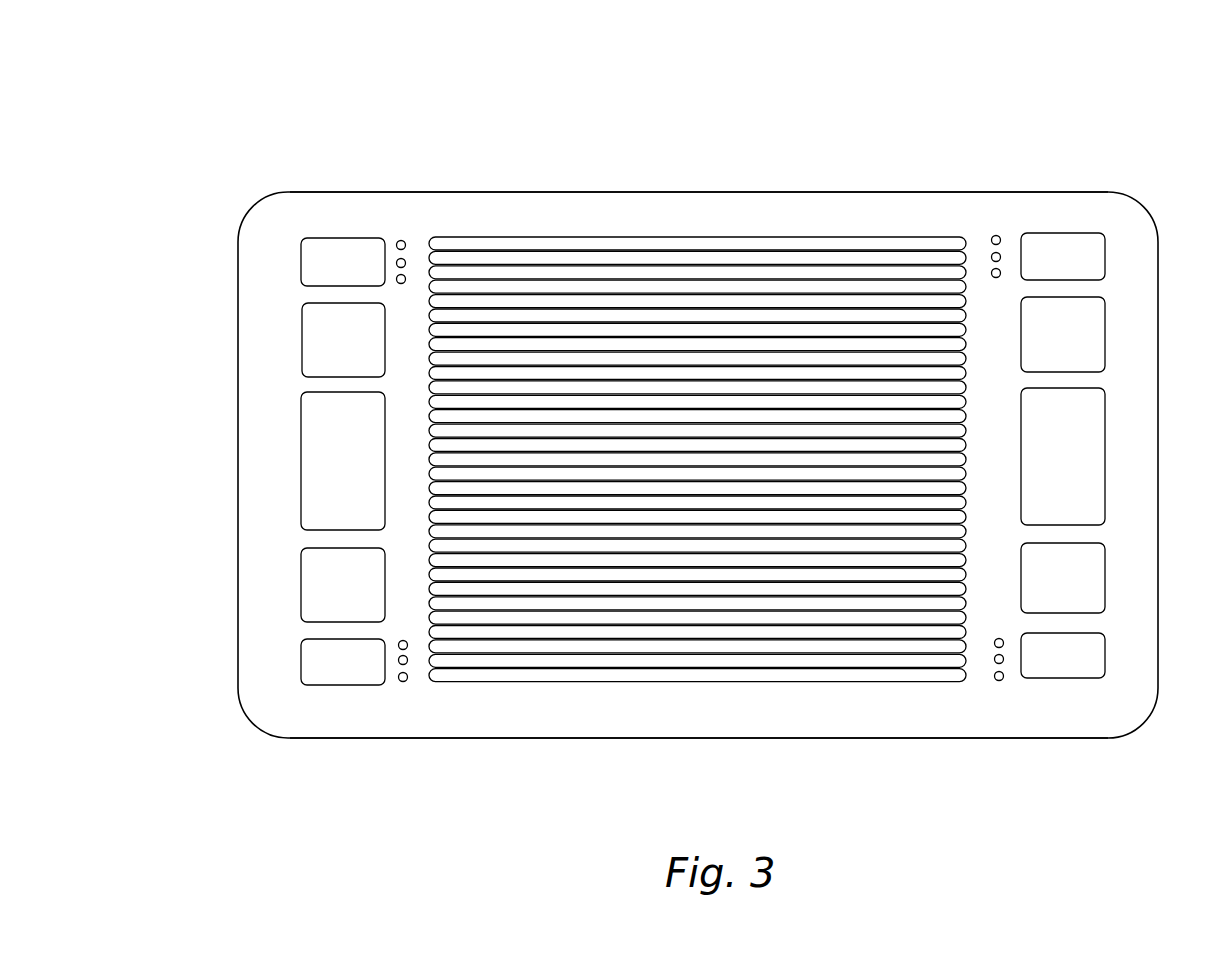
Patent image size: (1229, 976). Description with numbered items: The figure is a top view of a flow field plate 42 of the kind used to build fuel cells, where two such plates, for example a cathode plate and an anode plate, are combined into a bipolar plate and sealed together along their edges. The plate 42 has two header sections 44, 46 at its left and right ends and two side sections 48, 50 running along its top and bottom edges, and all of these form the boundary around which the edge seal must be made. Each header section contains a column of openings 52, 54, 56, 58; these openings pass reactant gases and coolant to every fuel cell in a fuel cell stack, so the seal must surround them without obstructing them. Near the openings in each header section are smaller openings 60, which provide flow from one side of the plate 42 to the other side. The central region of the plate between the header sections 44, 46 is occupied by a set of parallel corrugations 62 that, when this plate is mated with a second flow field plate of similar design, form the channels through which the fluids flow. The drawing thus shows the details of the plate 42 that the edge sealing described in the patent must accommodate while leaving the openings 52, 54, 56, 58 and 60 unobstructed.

The flow field plate 42 is at (748, 88).
The header section 44 is at (317, 168).
The header section 46 is at (1085, 164).
The side section 48 is at (549, 176).
The side section 50 is at (597, 748).
The opening 52 is at (310, 250).
The opening 54 is at (310, 425).
The opening 56 is at (310, 588).
The opening 58 is at (313, 668).
The openings 60 is at (401, 240).
The corrugations 62 is at (493, 228).